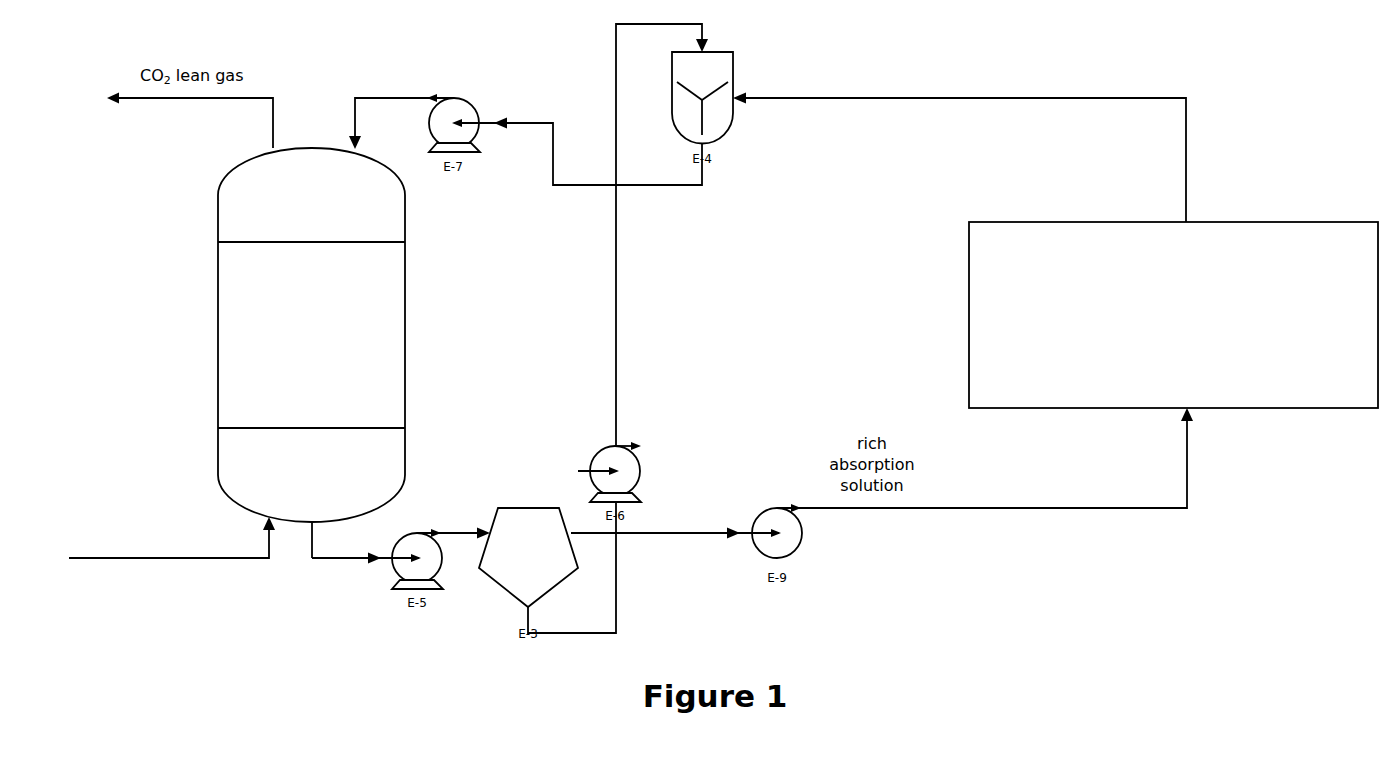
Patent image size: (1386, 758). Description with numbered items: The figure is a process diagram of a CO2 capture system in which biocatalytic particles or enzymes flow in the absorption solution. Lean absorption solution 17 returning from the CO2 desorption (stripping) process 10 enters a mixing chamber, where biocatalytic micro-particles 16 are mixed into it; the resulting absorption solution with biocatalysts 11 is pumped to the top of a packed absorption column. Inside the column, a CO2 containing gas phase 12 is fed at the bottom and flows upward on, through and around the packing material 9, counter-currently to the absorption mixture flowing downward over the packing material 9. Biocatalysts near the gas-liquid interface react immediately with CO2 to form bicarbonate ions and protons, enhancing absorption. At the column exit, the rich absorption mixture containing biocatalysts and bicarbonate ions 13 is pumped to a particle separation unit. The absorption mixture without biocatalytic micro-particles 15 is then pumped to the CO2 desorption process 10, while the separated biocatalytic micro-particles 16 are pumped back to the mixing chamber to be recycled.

The packing material 9 is at (311, 357).
The CO2 desorption process 10 is at (1173, 315).
The absorption solution with biocatalysts 11 is at (577, 136).
The CO2 containing gas phase 12 is at (172, 555).
The rich absorption mixture containing biocatalysts and bicarbonate ions 13 is at (366, 580).
The absorption mixture without biocatalytic micro-particles 15 is at (676, 519).
The biocatalytic micro-particles 16 is at (618, 328).
The lean absorption solution 17 is at (959, 126).